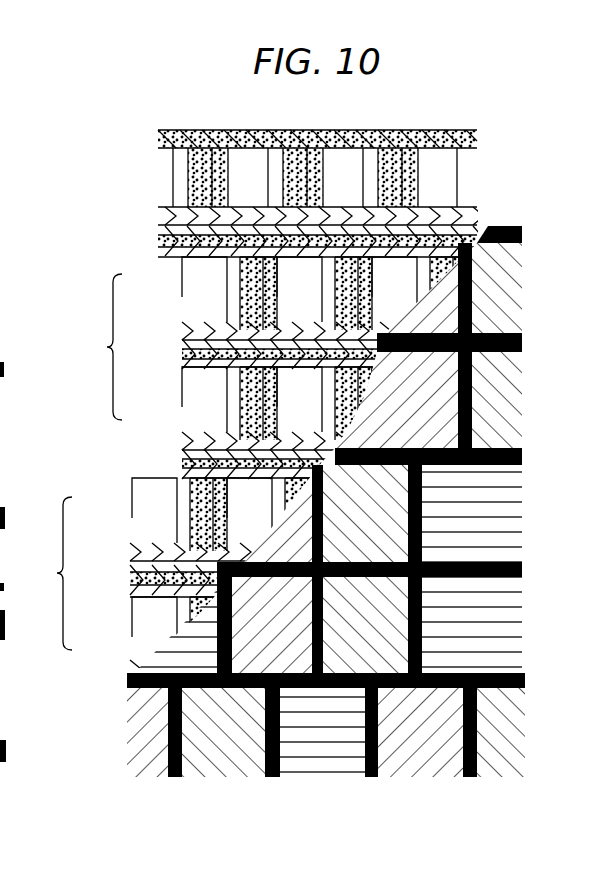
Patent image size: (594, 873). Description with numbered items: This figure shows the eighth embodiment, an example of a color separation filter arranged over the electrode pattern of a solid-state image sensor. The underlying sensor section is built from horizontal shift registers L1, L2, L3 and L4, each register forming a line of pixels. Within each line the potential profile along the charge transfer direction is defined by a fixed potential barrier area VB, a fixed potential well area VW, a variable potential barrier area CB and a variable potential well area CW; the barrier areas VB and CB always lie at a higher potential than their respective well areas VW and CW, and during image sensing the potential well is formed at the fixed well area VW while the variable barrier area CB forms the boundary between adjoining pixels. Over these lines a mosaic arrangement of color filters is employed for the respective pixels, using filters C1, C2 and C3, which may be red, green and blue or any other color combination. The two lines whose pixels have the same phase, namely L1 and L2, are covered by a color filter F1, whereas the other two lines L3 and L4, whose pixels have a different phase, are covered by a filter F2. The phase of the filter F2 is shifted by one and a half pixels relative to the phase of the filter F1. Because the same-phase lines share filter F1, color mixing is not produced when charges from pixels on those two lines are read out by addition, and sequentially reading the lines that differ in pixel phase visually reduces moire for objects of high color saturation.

The horizontal shift register L1 is at (314, 309).
The horizontal shift register L2 is at (173, 433).
The horizontal shift register L3 is at (125, 573).
The horizontal shift register L4 is at (125, 677).
The color filter F1 is at (532, 245).
The filter F2 is at (532, 467).
The variable potential well area CW is at (342, 278).
The variable potential barrier area CB is at (364, 303).
The fixed potential well area VW is at (424, 287).
The fixed potential barrier area VB is at (390, 322).
The filter C1 is at (399, 406).
The filter C2 is at (525, 411).
The filter C3 is at (377, 432).